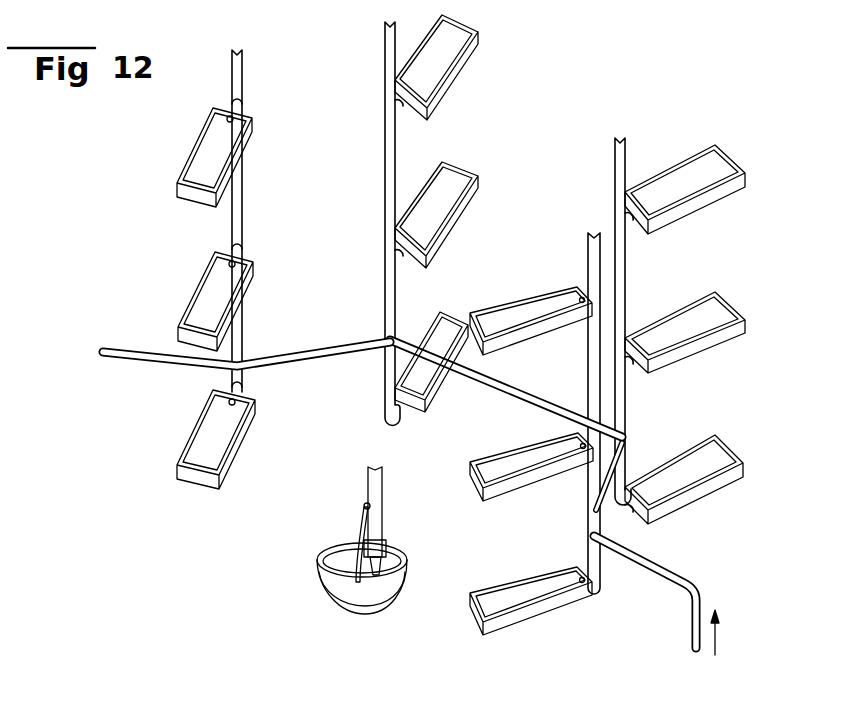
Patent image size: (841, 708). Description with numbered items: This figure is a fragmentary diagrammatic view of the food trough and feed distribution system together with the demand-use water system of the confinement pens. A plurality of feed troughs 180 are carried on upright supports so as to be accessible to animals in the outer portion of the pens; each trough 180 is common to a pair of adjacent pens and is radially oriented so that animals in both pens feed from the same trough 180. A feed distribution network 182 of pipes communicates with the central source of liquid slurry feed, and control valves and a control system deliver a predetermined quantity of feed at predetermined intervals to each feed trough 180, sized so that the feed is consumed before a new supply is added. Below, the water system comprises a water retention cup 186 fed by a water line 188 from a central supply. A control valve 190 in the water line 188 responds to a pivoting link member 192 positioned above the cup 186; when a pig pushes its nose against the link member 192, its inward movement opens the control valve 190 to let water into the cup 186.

The feed trough 180 is at (205, 267).
The feed distribution network 182 is at (128, 366).
The water retention cup 186 is at (350, 608).
The water line 188 is at (372, 484).
The control valve 190 is at (384, 544).
The pivoting link member 192 is at (348, 575).